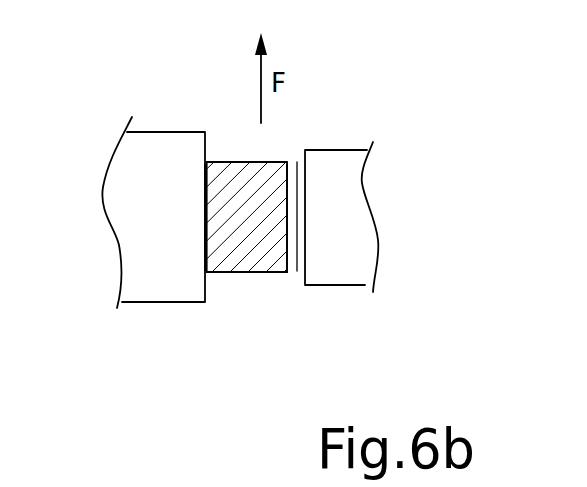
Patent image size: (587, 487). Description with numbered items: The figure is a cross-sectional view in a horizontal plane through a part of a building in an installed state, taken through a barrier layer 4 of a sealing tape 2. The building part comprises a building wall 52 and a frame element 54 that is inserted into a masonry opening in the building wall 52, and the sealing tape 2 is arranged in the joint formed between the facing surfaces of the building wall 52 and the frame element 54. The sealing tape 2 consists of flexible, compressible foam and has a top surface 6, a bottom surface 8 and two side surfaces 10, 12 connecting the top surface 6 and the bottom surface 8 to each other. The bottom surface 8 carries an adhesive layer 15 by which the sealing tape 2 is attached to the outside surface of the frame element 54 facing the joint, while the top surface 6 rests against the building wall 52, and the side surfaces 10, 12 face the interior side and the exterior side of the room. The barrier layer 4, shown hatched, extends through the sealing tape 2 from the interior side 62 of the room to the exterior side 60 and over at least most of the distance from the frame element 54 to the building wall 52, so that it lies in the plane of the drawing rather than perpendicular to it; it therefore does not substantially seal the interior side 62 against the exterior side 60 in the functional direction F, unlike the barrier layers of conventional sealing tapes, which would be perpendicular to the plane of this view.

The sealing tape 2 is at (262, 280).
The barrier layer 4 is at (242, 250).
The top surface 6 is at (205, 223).
The bottom surface 8 is at (292, 182).
The side surface 10 is at (265, 163).
The side surface 12 is at (254, 262).
The adhesive layer 15 is at (302, 255).
The building wall 52 is at (170, 150).
The frame element 54 is at (355, 244).
The exterior side 60 is at (362, 66).
The interior side 62 is at (360, 392).